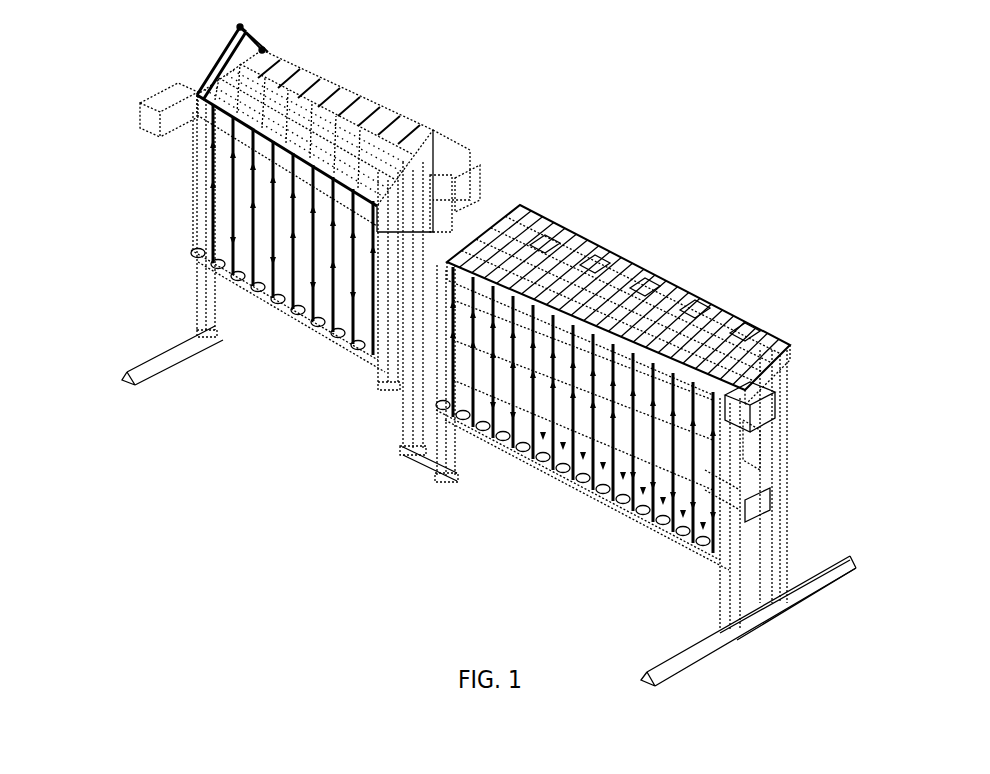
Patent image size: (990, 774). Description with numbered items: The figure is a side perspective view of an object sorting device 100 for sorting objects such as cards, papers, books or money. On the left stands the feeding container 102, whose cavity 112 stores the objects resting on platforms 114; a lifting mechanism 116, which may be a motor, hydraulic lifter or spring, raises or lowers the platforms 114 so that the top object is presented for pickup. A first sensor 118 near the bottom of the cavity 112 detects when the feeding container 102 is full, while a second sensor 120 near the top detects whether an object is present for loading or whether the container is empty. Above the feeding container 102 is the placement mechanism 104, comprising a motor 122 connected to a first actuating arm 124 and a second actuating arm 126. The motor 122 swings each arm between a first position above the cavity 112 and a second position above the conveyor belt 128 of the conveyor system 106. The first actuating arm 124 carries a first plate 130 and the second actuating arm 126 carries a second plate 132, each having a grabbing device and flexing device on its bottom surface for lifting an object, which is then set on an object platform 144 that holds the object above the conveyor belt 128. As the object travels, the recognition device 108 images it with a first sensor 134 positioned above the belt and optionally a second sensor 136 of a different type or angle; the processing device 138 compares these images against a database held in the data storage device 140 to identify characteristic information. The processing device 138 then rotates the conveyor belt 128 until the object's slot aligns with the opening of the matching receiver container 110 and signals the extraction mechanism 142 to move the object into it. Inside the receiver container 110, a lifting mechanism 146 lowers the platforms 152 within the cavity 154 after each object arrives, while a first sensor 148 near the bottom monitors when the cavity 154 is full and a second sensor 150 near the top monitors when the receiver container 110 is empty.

The object sorting device 100 is at (645, 100).
The feeding container 102 is at (185, 190).
The placement mechanism 104 is at (185, 80).
The conveyor system 106 is at (744, 392).
The recognition device 108 is at (540, 202).
The receiver container 110 is at (800, 432).
The cavity 112 is at (380, 386).
The platforms 114 is at (350, 232).
The lifting mechanism 116 is at (385, 372).
The first sensor 118 is at (352, 342).
The second sensor 120 is at (200, 168).
The motor 122 is at (165, 102).
The first actuating arm 124 is at (226, 56).
The second actuating arm 126 is at (272, 52).
The conveyor belt 128 is at (480, 226).
The first plate 130 is at (289, 139).
The second plate 132 is at (306, 111).
The first sensor 134 is at (452, 160).
The second sensor 136 is at (479, 190).
The processing device 138 is at (436, 165).
The data storage device 140 is at (438, 186).
The extraction mechanism 142 is at (525, 248).
The object platform 144 is at (797, 423).
The lifting mechanism 146 is at (740, 566).
The first sensor 148 is at (764, 518).
The second sensor 150 is at (750, 455).
The platforms 152 is at (724, 468).
The cavity 154 is at (734, 508).